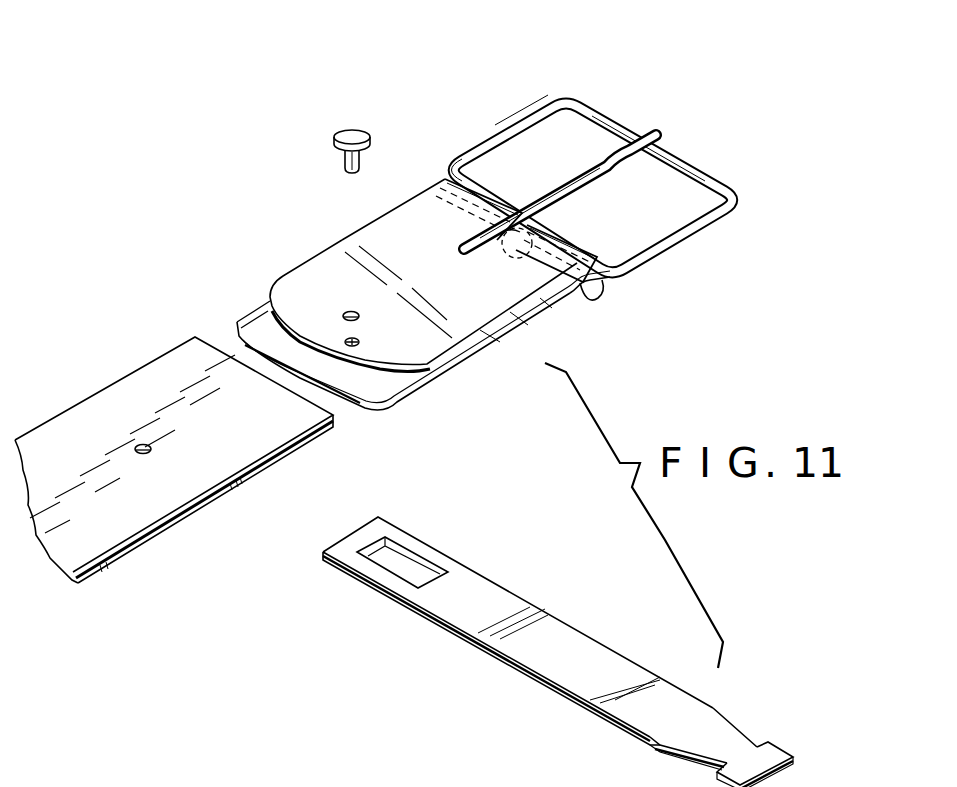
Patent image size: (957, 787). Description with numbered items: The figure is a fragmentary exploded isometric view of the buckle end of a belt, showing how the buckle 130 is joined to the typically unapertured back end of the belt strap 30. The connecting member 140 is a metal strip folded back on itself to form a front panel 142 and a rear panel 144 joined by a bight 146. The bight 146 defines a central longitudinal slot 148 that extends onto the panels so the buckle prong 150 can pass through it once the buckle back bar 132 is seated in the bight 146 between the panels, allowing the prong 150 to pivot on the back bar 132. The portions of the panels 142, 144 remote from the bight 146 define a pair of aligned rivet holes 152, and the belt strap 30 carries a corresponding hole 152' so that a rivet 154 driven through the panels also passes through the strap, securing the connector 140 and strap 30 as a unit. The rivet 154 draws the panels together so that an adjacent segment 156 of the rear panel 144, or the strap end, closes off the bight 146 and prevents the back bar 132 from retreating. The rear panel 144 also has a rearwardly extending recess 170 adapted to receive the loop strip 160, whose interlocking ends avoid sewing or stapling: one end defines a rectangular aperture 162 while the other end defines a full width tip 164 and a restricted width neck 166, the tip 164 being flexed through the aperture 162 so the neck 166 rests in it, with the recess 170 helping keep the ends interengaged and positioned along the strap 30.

The belt strap 30 is at (143, 390).
The hole in mounting plate 152' is at (166, 513).
The rivet 154 is at (350, 135).
The buckle 130 is at (560, 98).
The buckle back bar 132 is at (444, 169).
The buckle prong 150 is at (560, 192).
The central longitudinal slot 148 is at (418, 199).
The bight 146 is at (495, 178).
The connecting member 140 is at (322, 253).
The front panel 142 is at (293, 288).
The rear panel 144 is at (408, 375).
The rivet holes 152 is at (380, 346).
The recess 170 is at (523, 338).
The adjacent segment 156 is at (572, 300).
The loop strip 160 is at (455, 636).
The rectangular aperture 162 is at (410, 572).
The restricted width neck 166 is at (738, 728).
The full width tip 164 is at (785, 780).